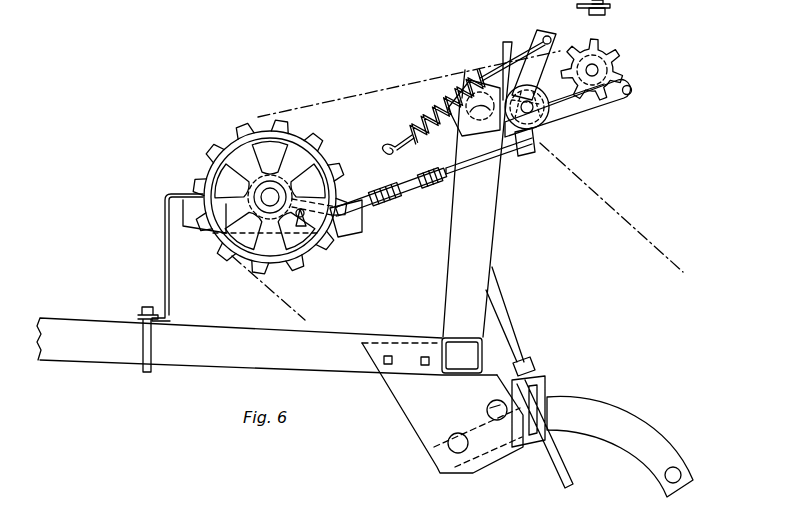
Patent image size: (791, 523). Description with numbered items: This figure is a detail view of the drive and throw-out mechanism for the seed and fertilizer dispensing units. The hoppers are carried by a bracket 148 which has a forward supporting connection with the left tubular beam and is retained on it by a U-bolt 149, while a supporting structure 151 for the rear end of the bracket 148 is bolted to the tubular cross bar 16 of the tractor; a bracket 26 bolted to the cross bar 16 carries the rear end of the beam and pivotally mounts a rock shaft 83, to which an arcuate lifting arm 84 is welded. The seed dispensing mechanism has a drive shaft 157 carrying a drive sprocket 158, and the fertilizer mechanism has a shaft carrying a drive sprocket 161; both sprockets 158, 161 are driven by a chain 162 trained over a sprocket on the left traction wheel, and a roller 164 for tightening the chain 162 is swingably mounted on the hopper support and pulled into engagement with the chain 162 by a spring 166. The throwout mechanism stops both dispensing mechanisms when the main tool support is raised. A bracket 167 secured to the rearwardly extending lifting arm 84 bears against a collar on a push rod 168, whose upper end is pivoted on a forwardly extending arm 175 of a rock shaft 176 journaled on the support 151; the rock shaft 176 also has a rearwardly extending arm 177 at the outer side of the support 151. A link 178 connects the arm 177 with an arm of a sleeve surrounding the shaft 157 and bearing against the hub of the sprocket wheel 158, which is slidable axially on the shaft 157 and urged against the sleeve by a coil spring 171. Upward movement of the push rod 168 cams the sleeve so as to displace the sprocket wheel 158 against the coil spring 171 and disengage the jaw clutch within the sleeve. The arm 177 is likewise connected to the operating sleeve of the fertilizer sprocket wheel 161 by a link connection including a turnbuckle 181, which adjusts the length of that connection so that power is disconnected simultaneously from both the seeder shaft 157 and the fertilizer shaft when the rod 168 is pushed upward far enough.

The tubular cross bar 16 is at (459, 371).
The bracket 26 is at (412, 419).
The rock shaft 83 is at (447, 446).
The arcuate lifting arm 84 is at (624, 416).
The bracket 148 is at (165, 270).
The U-bolt 149 is at (143, 372).
The supporting structure 151 is at (491, 226).
The drive shaft 157 is at (603, 13).
The drive sprocket 158 is at (614, 64).
The drive sprocket 161 is at (256, 129).
The chain 162 is at (389, 94).
The roller 164 is at (548, 126).
The spring 166 is at (415, 119).
The bracket 167 is at (545, 389).
The push rod 168 is at (511, 334).
The coil spring 171 is at (577, 6).
The forwardly extending arm 175 is at (466, 170).
The rock shaft 176 is at (466, 137).
The rearwardly extending arm 177 is at (528, 154).
The link 178 is at (591, 103).
The turnbuckle 181 is at (412, 201).